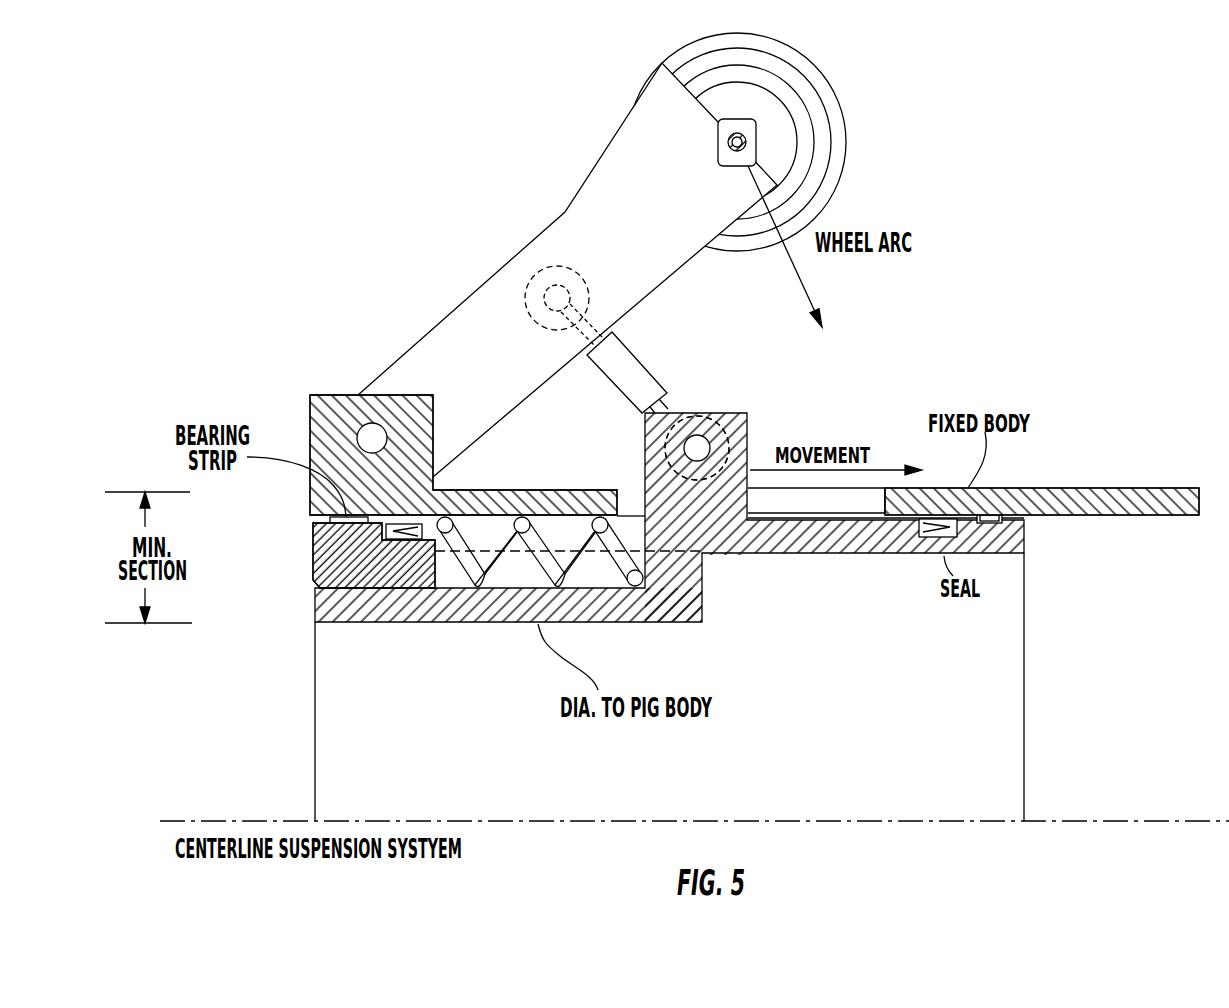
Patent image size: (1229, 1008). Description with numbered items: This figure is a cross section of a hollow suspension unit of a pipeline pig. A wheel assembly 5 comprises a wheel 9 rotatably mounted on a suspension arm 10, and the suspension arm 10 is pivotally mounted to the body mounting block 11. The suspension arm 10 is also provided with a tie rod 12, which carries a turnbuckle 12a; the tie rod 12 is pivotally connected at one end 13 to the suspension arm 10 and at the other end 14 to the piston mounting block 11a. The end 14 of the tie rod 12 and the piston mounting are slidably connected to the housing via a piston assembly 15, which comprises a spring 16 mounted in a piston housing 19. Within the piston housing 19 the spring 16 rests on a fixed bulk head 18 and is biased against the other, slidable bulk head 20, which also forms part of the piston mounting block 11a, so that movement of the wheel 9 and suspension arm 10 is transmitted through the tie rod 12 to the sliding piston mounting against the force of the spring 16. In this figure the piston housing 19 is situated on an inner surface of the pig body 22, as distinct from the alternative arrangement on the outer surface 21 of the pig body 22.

The wheel assembly 5 is at (745, 141).
The wheel 9 is at (813, 175).
The suspension arm 10 is at (491, 340).
The body mounting block 11 is at (336, 412).
The piston mounting block 11a is at (703, 447).
The tie rod 12 is at (597, 347).
The turnbuckle 12a is at (626, 372).
The tie rod end 13 is at (556, 298).
The tie rod end 14 is at (694, 413).
The piston assembly 15 is at (827, 532).
The spring 16 is at (578, 541).
The fixed bulk head 18 is at (333, 572).
The piston housing 19 is at (725, 512).
The slidable bulk head 20 is at (700, 557).
The outer surface of the pig body 21 is at (1070, 516).
The pig body 22 is at (1062, 488).